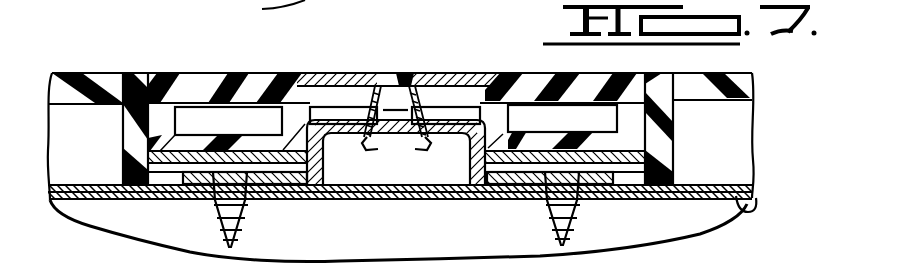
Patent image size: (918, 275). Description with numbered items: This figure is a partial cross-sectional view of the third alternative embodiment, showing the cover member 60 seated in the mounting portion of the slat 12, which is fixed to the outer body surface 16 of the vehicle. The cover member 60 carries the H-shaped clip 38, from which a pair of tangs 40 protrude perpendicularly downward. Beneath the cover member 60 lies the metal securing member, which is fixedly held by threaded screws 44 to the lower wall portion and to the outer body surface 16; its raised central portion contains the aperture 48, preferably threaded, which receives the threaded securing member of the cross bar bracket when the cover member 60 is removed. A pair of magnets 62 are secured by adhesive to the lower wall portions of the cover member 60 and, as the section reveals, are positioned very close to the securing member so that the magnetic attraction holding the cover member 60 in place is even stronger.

The slat 12 is at (52, 75).
The outer body surface 16 is at (756, 205).
The clip 38 is at (437, 80).
The tangs 40 is at (366, 148).
The threaded screws 44 is at (227, 215).
The aperture 48 is at (400, 123).
The cover member 60 is at (318, 62).
The magnets 62 is at (160, 157).